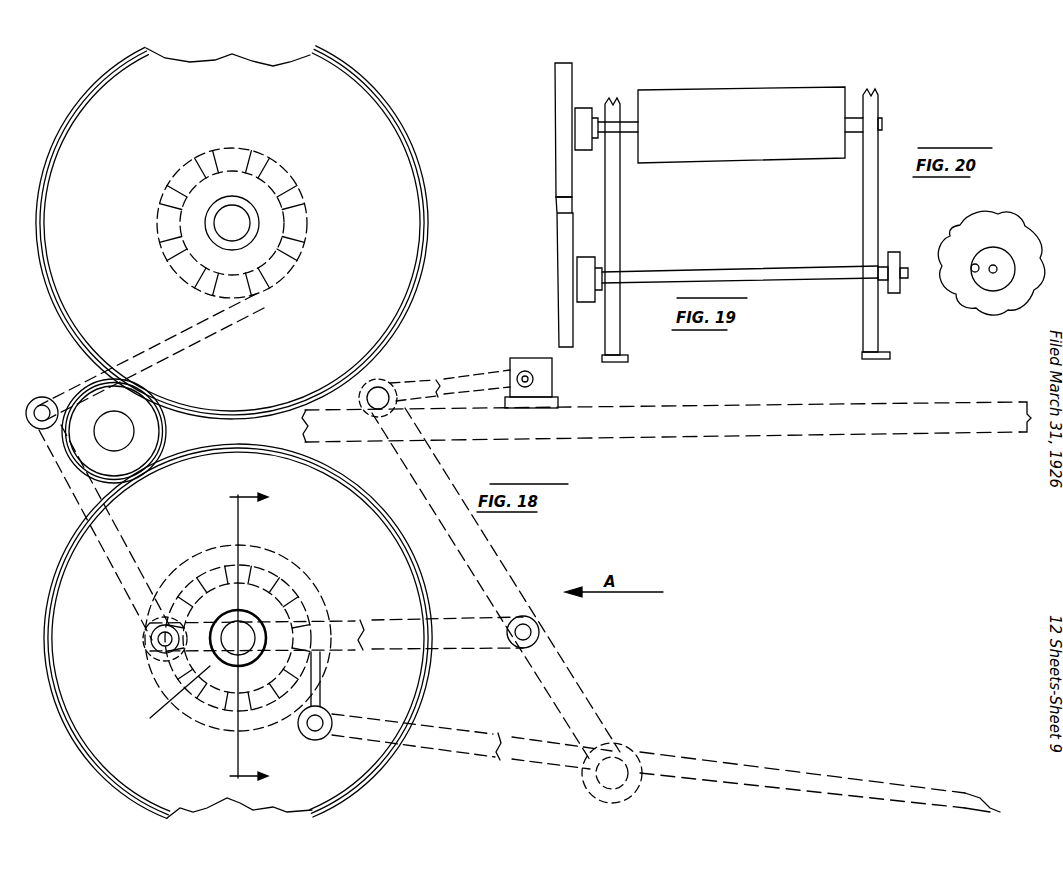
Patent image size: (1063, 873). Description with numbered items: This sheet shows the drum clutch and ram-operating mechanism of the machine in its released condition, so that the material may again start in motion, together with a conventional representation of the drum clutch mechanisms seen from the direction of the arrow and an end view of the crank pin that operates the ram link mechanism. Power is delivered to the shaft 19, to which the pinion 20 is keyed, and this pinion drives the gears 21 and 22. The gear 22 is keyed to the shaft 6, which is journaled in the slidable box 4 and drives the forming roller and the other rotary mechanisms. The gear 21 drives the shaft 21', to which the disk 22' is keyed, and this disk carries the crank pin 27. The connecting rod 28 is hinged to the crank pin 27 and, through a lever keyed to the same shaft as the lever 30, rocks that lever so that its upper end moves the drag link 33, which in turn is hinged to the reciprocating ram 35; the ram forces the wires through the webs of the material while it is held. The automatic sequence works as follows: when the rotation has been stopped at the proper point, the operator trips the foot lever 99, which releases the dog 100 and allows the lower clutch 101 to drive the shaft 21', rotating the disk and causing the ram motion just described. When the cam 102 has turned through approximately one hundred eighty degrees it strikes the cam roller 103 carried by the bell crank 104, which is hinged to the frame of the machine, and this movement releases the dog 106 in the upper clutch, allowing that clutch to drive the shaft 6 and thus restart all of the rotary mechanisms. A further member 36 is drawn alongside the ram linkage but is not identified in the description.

In FIG. 19, the slidable box 4 is at (740, 103).
In FIG. 19, the shaft 6 is at (880, 118).
In FIG. 18, the shaft 19 is at (113, 428).
In FIG. 18, the pinion 20 is at (164, 438).
In FIG. 18, the gear 21 is at (238, 631).
In FIG. 19, the gear 21 is at (556, 272).
In FIG. 20, the shaft 21' is at (1000, 237).
In FIG. 18, the gear 22 is at (240, 232).
In FIG. 19, the gear 22 is at (553, 130).
In FIG. 20, the gear 22 is at (991, 277).
In FIG. 19, the disk 22' is at (906, 308).
In FIG. 19, the crank pin 27 is at (895, 262).
In FIG. 20, the crank pin 27 is at (973, 265).
In FIG. 18, the connecting rod 28 is at (472, 650).
In FIG. 18, the lever 30 is at (493, 567).
In FIG. 18, the drag link 33 is at (453, 380).
In FIG. 18, the reciprocating ram 35 is at (520, 358).
In FIG. 18, the bar 36 is at (707, 412).
In FIG. 18, the foot lever 99 is at (795, 780).
In FIG. 18, the dog 100 is at (318, 702).
In FIG. 18, the lower clutch 101 is at (308, 590).
In FIG. 18, the cam 102 is at (174, 703).
In FIG. 18, the cam roller 103 is at (152, 645).
In FIG. 18, the bell crank 104 is at (68, 487).
In FIG. 18, the dog 106 is at (258, 299).